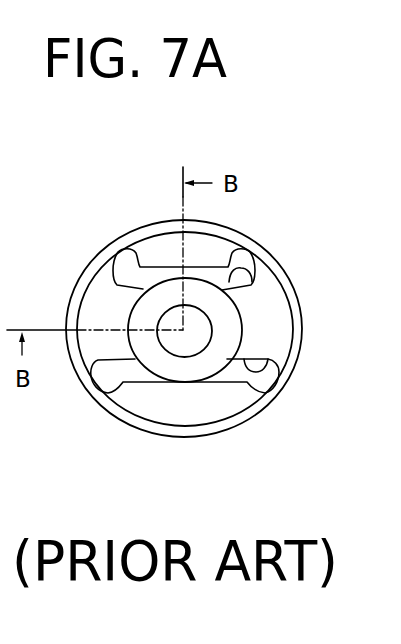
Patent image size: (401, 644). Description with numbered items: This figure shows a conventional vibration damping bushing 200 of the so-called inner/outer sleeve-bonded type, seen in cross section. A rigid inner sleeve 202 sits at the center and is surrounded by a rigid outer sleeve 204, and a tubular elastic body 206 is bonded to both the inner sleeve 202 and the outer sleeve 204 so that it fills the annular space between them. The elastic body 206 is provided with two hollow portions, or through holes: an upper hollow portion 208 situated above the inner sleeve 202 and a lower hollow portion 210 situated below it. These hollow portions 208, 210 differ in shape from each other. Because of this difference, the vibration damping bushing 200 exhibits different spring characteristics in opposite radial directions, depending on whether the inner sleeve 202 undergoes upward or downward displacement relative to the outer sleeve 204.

The vibration damping bushing 200 is at (146, 171).
The inner sleeve 202 is at (147, 315).
The outer sleeve 204 is at (235, 237).
The elastic body 206 is at (176, 408).
The hollow portion 208 is at (252, 271).
The hollow portion 210 is at (270, 364).